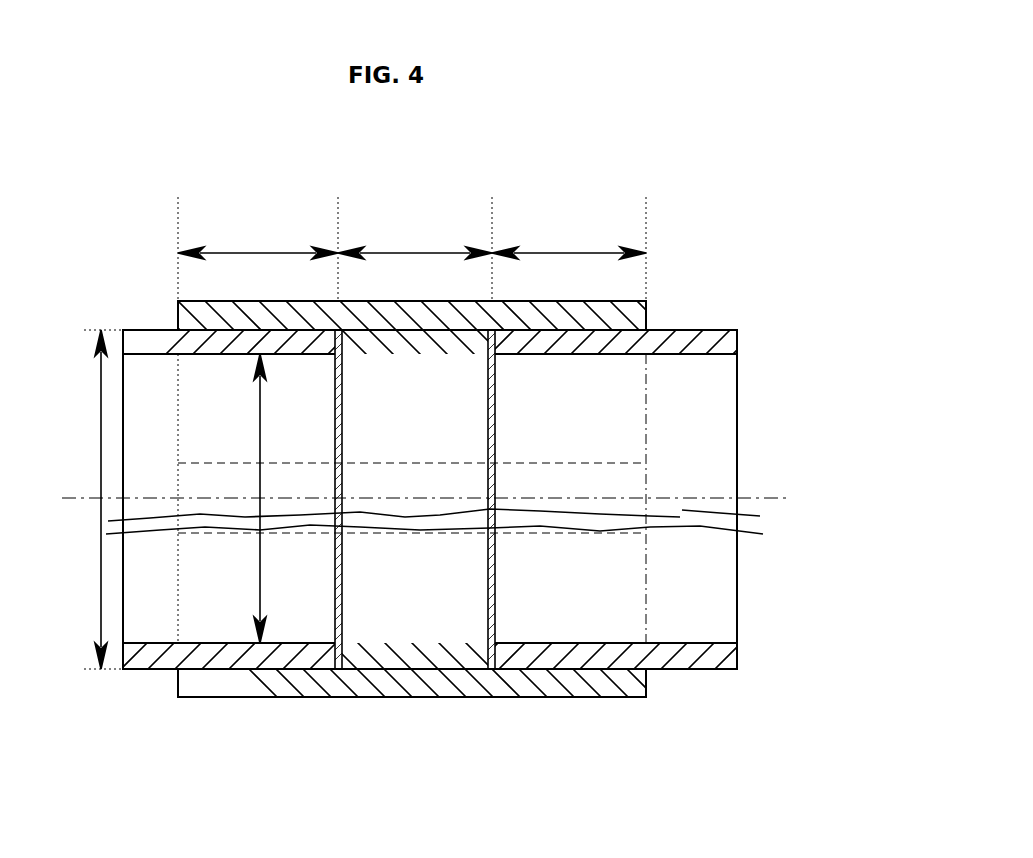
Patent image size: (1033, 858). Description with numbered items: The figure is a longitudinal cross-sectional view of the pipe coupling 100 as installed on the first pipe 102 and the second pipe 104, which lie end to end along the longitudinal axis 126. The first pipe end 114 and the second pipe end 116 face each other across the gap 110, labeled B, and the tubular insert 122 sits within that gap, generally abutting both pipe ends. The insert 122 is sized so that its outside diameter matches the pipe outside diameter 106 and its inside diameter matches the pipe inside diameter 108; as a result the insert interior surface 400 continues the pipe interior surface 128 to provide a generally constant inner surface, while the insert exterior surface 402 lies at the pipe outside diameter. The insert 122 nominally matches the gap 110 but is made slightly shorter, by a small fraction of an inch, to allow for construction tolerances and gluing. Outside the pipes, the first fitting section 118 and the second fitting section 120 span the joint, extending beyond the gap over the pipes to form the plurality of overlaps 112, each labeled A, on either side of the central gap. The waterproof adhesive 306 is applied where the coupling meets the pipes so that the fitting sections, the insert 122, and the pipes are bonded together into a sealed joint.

The pipe coupling 100 is at (514, 146).
The first pipe 102 is at (148, 330).
The second pipe 104 is at (693, 330).
The pipe outside diameter 106 is at (101, 488).
The pipe inside diameter 108 is at (260, 462).
The gap 110 is at (415, 258).
The overlap 112 is at (412, 254).
The first pipe end 114 is at (332, 425).
The second pipe end 116 is at (496, 436).
The first fitting section 118 is at (585, 300).
The second fitting section 120 is at (553, 697).
The insert 122 is at (490, 712).
The longitudinal axis 126 is at (695, 498).
The pipe interior surface 128 is at (240, 593).
The waterproof adhesive 306 is at (647, 318).
The insert interior surface 400 is at (383, 643).
The insert exterior surface 402 is at (385, 320).